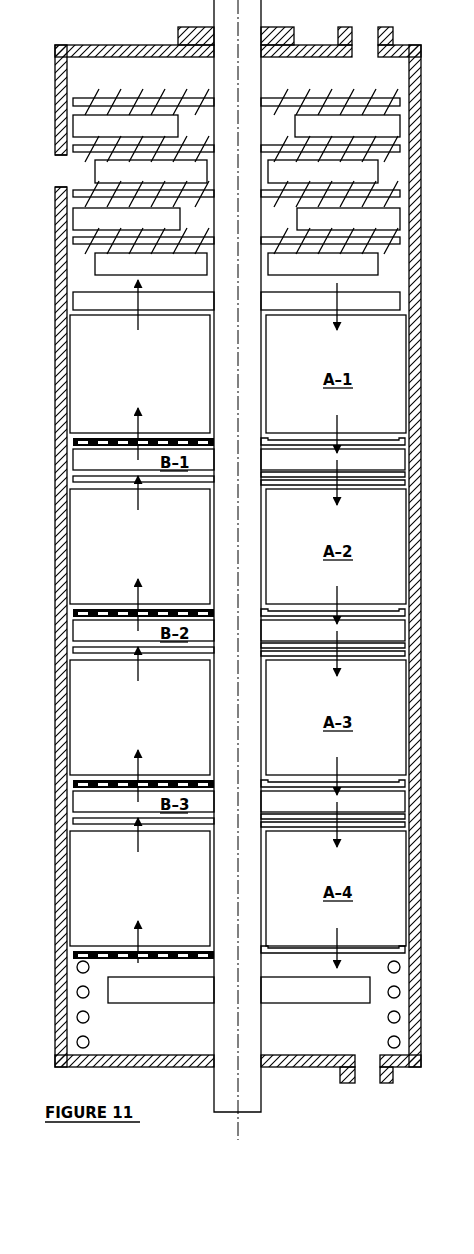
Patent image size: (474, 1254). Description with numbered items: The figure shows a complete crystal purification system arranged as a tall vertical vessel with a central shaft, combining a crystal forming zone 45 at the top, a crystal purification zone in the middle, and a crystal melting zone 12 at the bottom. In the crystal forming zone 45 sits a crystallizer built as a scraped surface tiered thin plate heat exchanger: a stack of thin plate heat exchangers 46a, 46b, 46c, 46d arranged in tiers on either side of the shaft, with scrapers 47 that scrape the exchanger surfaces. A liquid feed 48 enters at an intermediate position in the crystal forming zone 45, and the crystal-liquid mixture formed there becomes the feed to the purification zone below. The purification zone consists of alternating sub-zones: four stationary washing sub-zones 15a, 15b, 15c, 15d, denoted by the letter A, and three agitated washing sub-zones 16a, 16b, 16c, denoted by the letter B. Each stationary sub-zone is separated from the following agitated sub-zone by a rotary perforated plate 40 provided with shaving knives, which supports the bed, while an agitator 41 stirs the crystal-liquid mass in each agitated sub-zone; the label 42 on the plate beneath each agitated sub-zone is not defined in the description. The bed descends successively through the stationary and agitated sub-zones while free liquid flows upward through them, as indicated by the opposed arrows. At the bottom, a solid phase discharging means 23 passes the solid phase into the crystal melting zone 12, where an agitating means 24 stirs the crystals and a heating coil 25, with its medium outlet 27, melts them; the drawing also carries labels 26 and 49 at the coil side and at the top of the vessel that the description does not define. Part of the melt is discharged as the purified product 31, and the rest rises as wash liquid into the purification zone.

The crystal melting zone 12 is at (345, 1040).
The stationary washing sub-zone A-1 15a is at (400, 367).
The stationary washing sub-zone A-2 15b is at (400, 540).
The stationary washing sub-zone A-3 15c is at (400, 712).
The stationary washing sub-zone A-4 15d is at (400, 882).
The agitated washing sub-zone B-1 16a is at (405, 462).
The agitated washing sub-zone B-2 16b is at (405, 633).
The agitated washing sub-zone B-3 16c is at (405, 804).
The solid phase discharging means 23 is at (73, 953).
The agitating means 24 is at (161, 1008).
The heating coil 25 is at (77, 992).
The inlet opening 26 is at (80, 970).
The medium outlet 27 is at (400, 1042).
The purified product 31 is at (367, 1045).
The rotary perforated plate 40 is at (73, 442).
The agitator 41 is at (80, 457).
The plate 42 is at (73, 480).
The crystal forming zone 45 is at (292, 81).
The thin plate heat exchanger 46a is at (390, 126).
The thin plate heat exchanger 46b is at (370, 170).
The thin plate heat exchanger 46c is at (385, 220).
The thin plate heat exchanger 46d is at (370, 263).
The scrapers 47 is at (400, 101).
The liquid feed 48 is at (84, 170).
The top outlet nozzle 49 is at (367, 60).